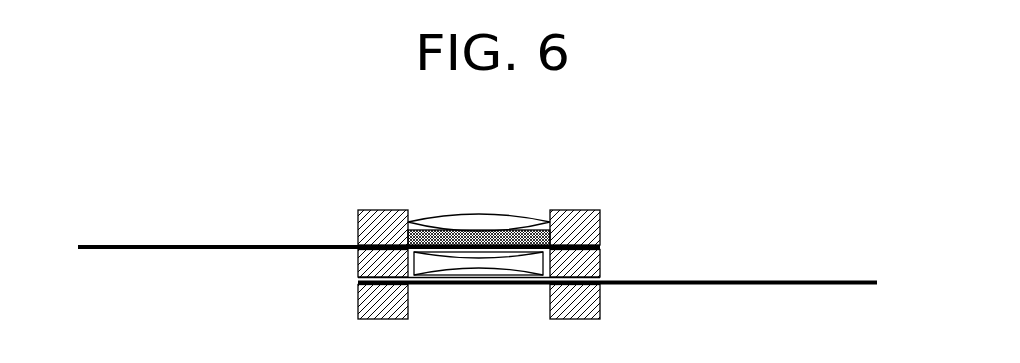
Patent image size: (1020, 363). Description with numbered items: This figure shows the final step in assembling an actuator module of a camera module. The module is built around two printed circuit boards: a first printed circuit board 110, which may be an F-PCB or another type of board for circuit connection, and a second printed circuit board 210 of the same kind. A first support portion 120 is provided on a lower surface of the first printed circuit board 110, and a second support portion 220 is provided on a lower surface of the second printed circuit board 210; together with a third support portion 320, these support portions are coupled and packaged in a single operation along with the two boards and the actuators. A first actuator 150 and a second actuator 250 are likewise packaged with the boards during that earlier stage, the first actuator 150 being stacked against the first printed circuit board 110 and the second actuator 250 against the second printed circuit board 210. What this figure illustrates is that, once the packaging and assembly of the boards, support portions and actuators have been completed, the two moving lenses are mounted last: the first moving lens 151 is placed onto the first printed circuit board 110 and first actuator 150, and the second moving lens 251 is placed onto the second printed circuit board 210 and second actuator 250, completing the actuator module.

The first printed circuit board 110 is at (117, 245).
The second printed circuit board 210 is at (822, 281).
The third support portion 320 is at (358, 218).
The first support portion 120 is at (358, 272).
The second support portion 220 is at (356, 319).
The first moving lens 151 is at (512, 216).
The first actuator 150 is at (547, 238).
The second moving lens 251 is at (537, 262).
The second actuator 250 is at (502, 281).